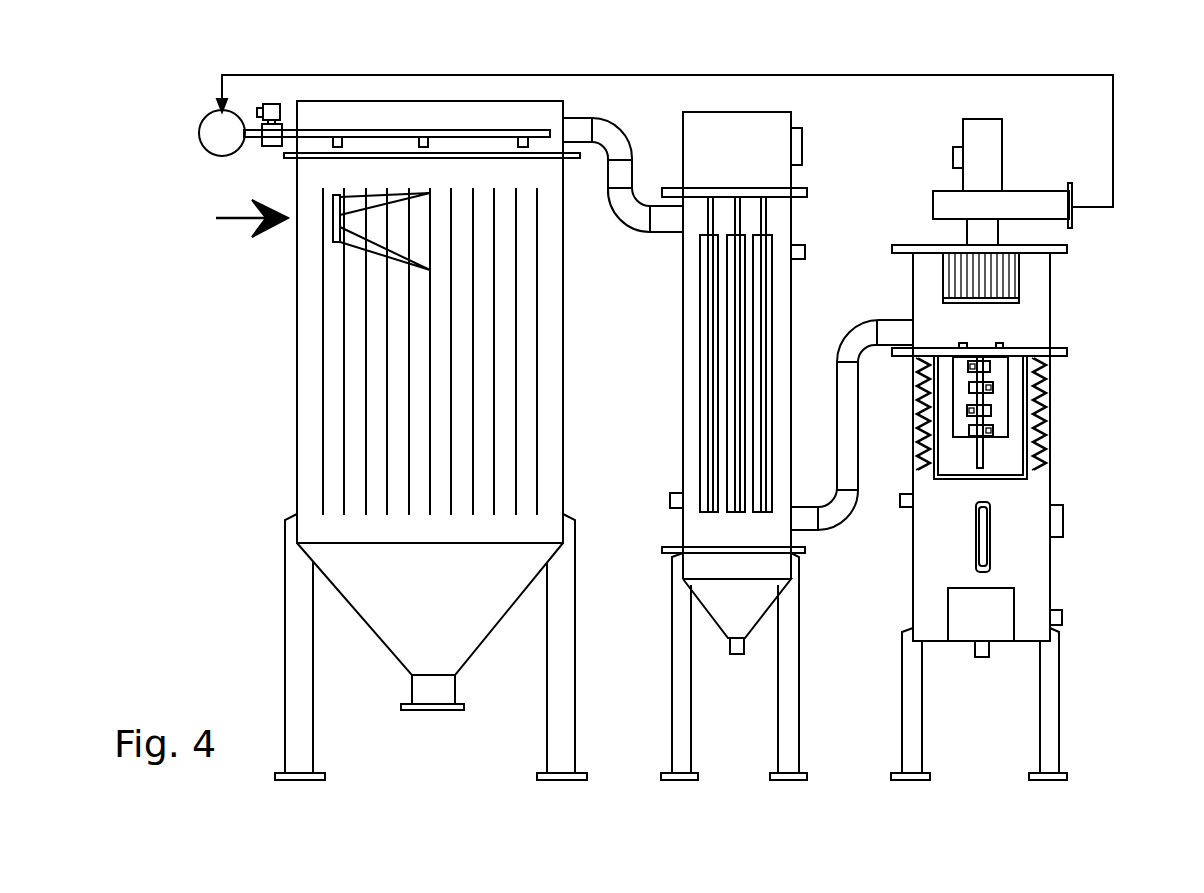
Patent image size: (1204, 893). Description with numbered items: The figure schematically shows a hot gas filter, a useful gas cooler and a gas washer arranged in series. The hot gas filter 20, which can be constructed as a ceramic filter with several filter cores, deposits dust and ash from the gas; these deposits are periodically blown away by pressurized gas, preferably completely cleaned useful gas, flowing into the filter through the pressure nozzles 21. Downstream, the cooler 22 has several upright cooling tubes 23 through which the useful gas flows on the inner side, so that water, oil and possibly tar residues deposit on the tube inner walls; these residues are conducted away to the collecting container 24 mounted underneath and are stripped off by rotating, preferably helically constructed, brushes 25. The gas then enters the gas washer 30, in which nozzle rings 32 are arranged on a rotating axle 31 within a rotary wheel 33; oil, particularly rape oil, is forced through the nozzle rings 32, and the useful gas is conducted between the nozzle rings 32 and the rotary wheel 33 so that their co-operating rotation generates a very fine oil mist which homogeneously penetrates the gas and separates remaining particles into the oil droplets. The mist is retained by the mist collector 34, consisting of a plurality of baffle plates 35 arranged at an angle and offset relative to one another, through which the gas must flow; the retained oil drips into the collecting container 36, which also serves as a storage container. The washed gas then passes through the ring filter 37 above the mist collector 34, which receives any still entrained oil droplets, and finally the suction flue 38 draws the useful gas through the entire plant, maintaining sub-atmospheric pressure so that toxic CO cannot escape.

The hot gas filter 20 is at (292, 334).
The pressure nozzles 21 is at (337, 137).
The cooler 22 is at (683, 335).
The cooling tubes 23 is at (703, 420).
The collecting container 24 is at (728, 604).
The brushes 25 is at (765, 228).
The gas washer 30 is at (1050, 303).
The rotating axle 31 is at (985, 455).
The nozzle rings 32 is at (995, 410).
The rotary wheel 33 is at (1012, 382).
The mist collector 34 is at (920, 478).
The baffle plates 35 is at (1042, 473).
The collecting container 36 is at (1033, 619).
The ring filter 37 is at (1003, 277).
The suction flue 38 is at (982, 159).